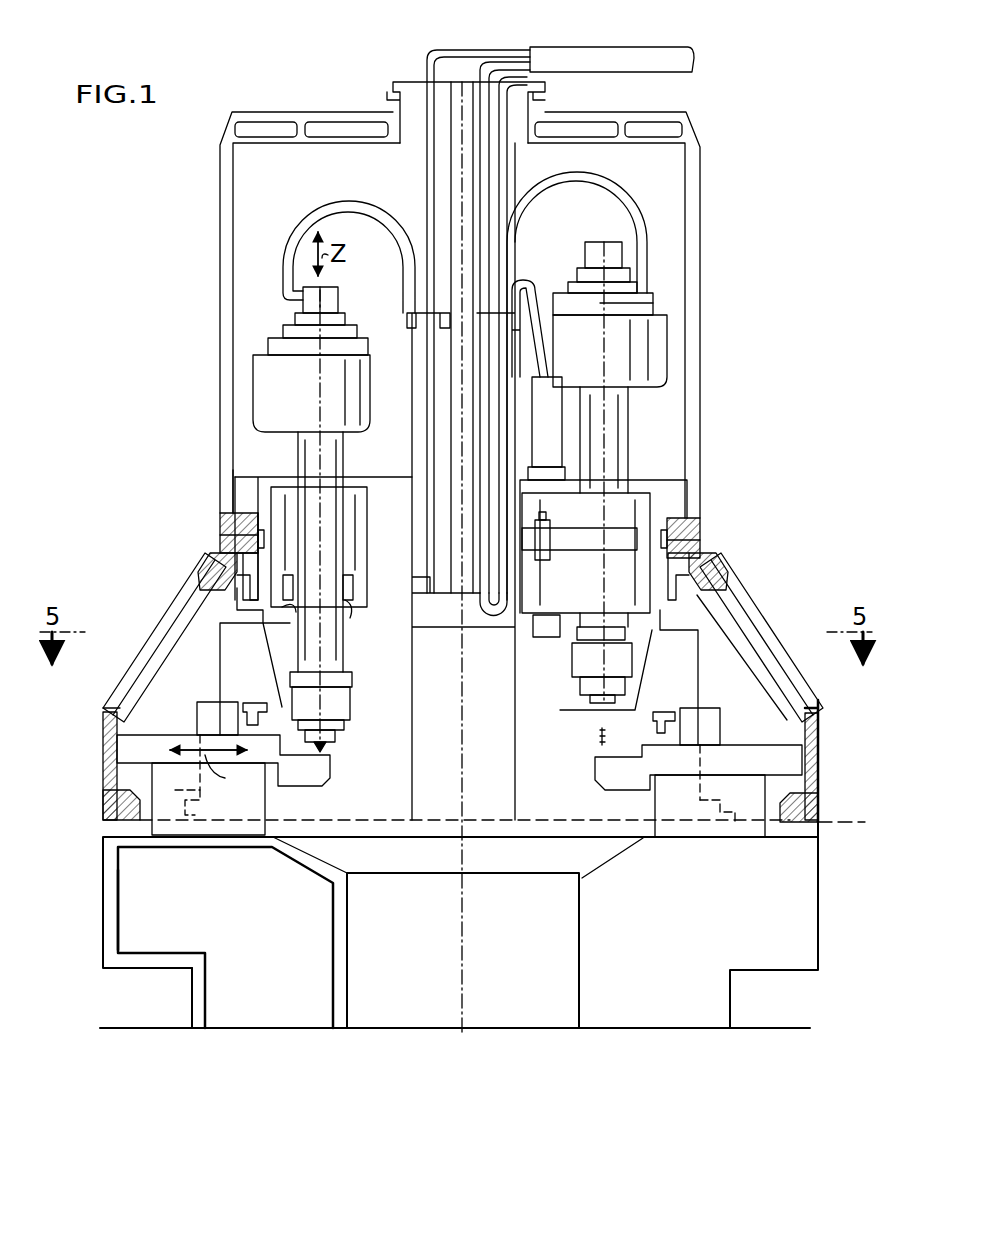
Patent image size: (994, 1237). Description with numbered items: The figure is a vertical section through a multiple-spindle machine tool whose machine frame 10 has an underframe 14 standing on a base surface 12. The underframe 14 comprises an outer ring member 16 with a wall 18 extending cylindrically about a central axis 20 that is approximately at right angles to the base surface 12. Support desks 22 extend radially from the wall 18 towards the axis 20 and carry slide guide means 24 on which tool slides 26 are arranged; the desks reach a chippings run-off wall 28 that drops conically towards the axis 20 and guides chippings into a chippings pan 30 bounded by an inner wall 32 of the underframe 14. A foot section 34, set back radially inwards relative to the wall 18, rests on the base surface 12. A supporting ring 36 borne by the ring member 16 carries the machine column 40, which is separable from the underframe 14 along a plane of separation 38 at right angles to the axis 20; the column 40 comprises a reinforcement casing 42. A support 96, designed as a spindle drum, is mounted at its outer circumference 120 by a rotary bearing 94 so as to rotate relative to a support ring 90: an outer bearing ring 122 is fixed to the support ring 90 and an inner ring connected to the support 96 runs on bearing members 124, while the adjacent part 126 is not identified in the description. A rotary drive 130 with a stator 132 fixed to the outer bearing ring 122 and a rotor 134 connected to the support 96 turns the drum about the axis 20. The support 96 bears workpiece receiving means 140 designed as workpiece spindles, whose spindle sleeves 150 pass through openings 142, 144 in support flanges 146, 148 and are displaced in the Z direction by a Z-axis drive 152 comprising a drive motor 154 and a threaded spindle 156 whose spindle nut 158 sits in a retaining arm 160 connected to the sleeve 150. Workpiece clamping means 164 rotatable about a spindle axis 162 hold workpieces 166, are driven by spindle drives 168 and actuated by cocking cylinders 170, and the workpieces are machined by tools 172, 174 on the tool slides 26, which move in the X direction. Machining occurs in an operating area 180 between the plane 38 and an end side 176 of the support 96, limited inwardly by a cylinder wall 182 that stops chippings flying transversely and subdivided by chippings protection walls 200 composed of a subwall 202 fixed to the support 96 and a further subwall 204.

The machine frame 10 is at (207, 518).
The base surface 12 is at (790, 1026).
The underframe 14 is at (284, 970).
The outer ring member 16 is at (100, 903).
The wall 18 is at (112, 936).
The axis 20 is at (468, 962).
The support desks 22 is at (152, 846).
The slide guide means 24 is at (165, 780).
The tool slides 26 is at (150, 745).
The chippings run-off wall 28 is at (336, 868).
The chippings pan 30 is at (425, 978).
The inner wall 32 is at (346, 990).
The foot section 34 is at (186, 993).
The supporting ring 36 is at (820, 838).
The plane of separation 38 is at (855, 822).
The machine column 40 is at (766, 606).
The reinforcement casing 42 is at (173, 604).
The support ring 90 is at (705, 578).
The rotary bearing 94 is at (706, 530).
The support 96 is at (235, 475).
The outer circumference 120 is at (240, 508).
The outer bearing ring 122 is at (248, 522).
The bearing members 124 is at (222, 540).
The guide block 126 is at (222, 565).
The rotary drive 130 is at (686, 505).
The stator 132 is at (690, 520).
The rotor 134 is at (700, 486).
The workpiece receiving means 140 is at (636, 408).
The opening 142 is at (266, 470).
The opening 144 is at (220, 625).
The support flange 146 is at (346, 480).
The support flange 148 is at (350, 612).
The spindle sleeve 150 is at (300, 472).
The Z-axis drive 152 is at (540, 382).
The drive motor 154 is at (622, 386).
The threaded spindle 156 is at (632, 500).
The spindle nut 158 is at (537, 552).
The retaining arm 160 is at (558, 630).
The spindle axis 162 is at (296, 640).
The workpiece clamping means 164 is at (290, 690).
The workpieces 166 is at (342, 724).
The spindle drives 168 is at (300, 390).
The cocking cylinders 170 is at (300, 293).
The tool 172 is at (243, 705).
The tool 174 is at (326, 748).
The end side 176 is at (412, 636).
The operating area 180 is at (576, 803).
The cylinder wall 182 is at (480, 792).
The chippings protection walls 200 is at (680, 674).
The subwall 202 is at (705, 640).
The subwall 204 is at (690, 702).